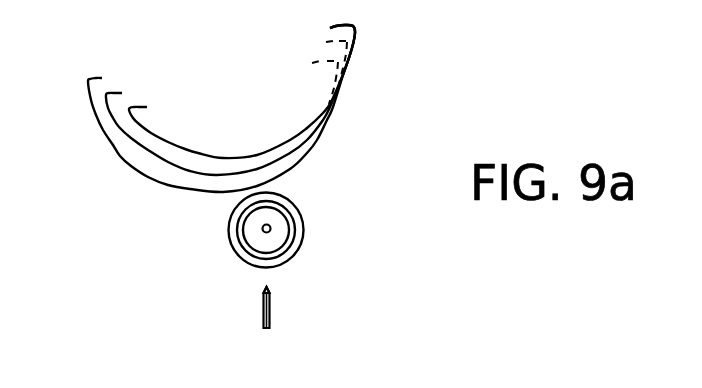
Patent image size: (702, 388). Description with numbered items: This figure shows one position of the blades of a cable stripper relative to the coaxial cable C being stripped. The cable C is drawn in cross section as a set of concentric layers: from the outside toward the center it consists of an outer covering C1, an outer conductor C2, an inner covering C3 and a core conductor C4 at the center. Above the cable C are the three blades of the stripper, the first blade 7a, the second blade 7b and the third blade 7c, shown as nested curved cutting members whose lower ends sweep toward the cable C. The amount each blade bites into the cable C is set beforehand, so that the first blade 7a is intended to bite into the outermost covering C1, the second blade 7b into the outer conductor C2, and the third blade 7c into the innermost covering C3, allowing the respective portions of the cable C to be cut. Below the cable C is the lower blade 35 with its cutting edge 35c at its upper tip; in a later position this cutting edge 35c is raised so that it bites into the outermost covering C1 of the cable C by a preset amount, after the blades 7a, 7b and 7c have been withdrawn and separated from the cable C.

The first blade 7a is at (151, 122).
The second blade 7b is at (155, 144).
The third blade 7c is at (159, 172).
The cable C is at (269, 249).
The outer covering C1 is at (230, 223).
The outer conductor C2 is at (240, 243).
The inner covering C3 is at (281, 224).
The core conductor C4 is at (272, 231).
The lower blade 35 is at (240, 322).
The cutting edge 35c is at (259, 286).